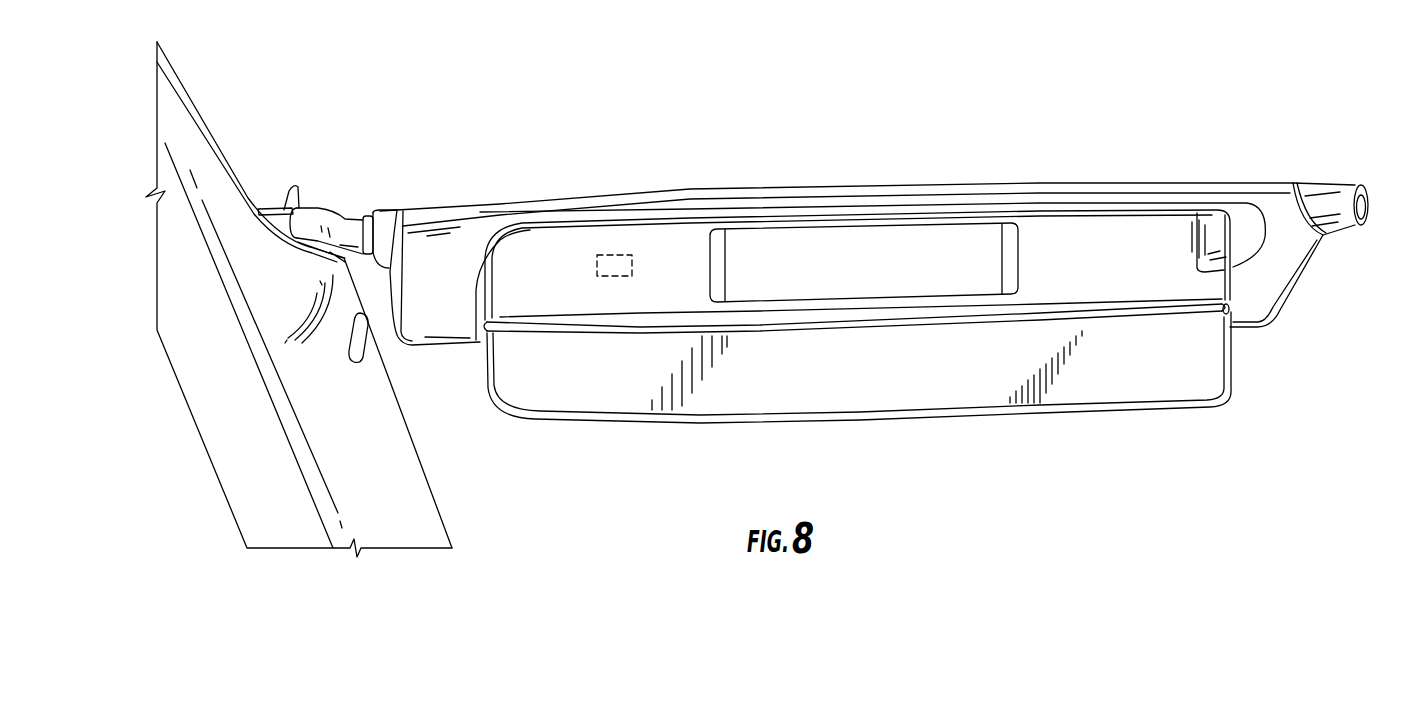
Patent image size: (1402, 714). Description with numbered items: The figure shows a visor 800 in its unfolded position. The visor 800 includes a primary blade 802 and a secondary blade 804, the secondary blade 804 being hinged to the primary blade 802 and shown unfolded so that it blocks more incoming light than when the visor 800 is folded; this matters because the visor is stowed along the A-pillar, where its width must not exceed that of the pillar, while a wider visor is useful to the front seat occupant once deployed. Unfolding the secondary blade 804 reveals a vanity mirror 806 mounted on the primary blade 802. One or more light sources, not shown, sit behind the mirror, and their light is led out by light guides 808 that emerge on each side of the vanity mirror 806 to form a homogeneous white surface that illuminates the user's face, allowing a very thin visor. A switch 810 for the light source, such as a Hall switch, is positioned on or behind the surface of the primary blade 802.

The visor 800 is at (1163, 150).
The primary blade 802 is at (428, 344).
The secondary blade 804 is at (613, 423).
The vanity mirror 806 is at (870, 247).
The light guides 808 is at (717, 253).
The switch 810 is at (607, 255).